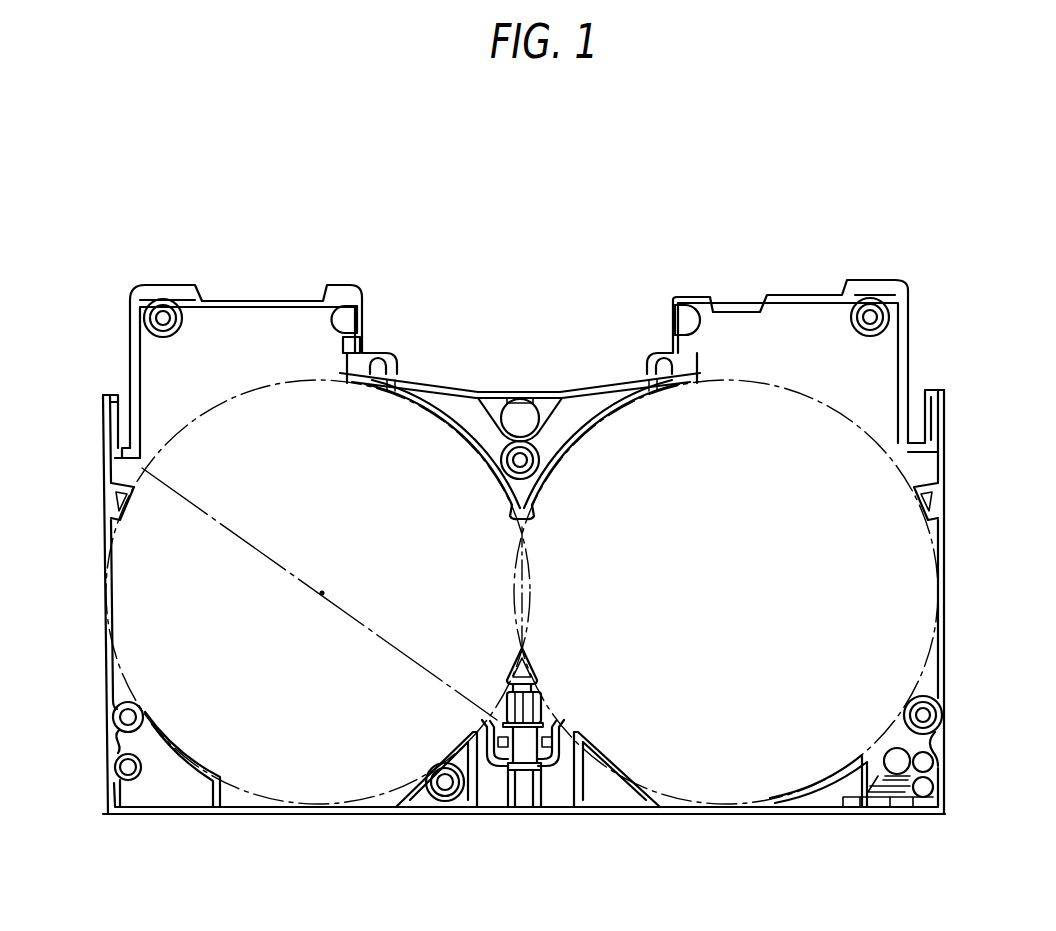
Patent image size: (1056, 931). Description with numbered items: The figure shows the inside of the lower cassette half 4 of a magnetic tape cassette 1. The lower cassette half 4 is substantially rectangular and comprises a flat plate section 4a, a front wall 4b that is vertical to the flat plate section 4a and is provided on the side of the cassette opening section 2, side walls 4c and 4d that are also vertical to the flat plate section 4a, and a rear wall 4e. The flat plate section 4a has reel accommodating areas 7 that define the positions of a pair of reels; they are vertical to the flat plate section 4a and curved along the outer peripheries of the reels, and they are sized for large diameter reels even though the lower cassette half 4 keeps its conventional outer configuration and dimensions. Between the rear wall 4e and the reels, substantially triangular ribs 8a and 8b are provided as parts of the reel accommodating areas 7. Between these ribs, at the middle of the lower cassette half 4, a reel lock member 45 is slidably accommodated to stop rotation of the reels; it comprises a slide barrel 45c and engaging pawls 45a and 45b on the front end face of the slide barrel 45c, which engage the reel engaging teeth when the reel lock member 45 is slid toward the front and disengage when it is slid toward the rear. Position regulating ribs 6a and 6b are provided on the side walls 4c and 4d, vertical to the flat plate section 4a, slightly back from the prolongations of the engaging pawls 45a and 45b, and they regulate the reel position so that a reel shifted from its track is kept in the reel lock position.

The magnetic tape cassette 1 is at (614, 280).
The cassette opening section 2 is at (498, 360).
The lower cassette half 4 is at (809, 292).
The flat plate section 4a is at (858, 572).
The front wall 4b is at (432, 387).
The side wall 4c is at (105, 600).
The side wall 4d is at (943, 602).
The rear wall 4e is at (445, 812).
The position regulating rib 6a is at (115, 484).
The position regulating rib 6b is at (938, 480).
The reel accommodating areas 7 is at (457, 440).
The substantially triangular rib 8a is at (396, 812).
The substantially triangular rib 8b is at (675, 812).
The reel lock member 45 is at (557, 693).
The engaging pawl 45a is at (478, 716).
The engaging pawl 45b is at (577, 711).
The slide barrel 45c is at (562, 812).